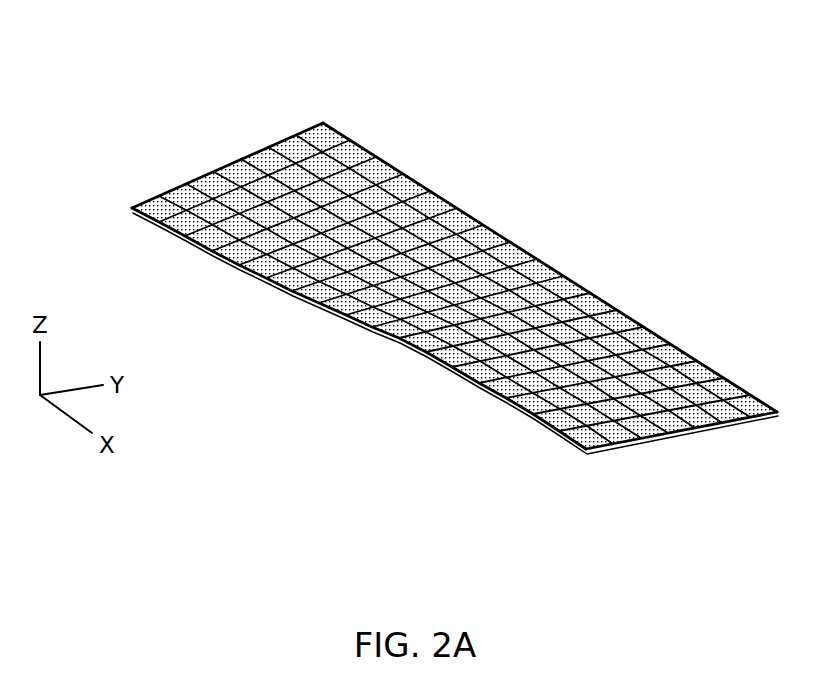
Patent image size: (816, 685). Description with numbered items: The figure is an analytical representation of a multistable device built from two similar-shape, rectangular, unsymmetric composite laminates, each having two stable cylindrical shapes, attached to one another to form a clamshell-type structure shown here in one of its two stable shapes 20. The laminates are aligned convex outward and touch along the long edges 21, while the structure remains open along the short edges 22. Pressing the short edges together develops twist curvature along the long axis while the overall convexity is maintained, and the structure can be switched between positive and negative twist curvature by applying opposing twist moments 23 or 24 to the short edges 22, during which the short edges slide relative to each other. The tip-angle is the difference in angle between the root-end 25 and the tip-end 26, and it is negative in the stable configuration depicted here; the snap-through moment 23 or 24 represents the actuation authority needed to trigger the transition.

The stable shape 20 is at (400, 117).
The long edges 21 is at (470, 217).
The short edges 22 is at (170, 192).
The twist moment 23 is at (717, 440).
The twist moment 24 is at (307, 25).
The root-end 25 is at (213, 150).
The tip-end 26 is at (612, 468).